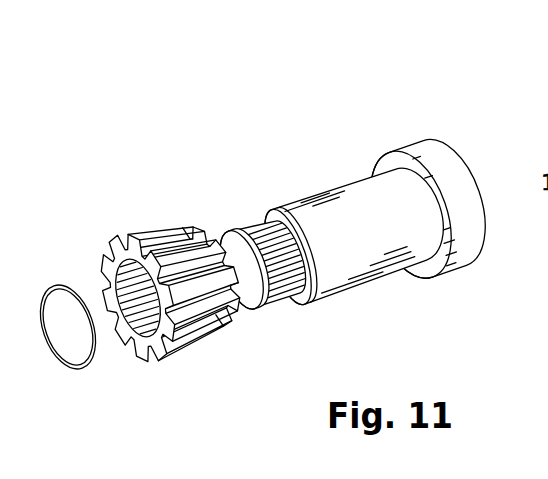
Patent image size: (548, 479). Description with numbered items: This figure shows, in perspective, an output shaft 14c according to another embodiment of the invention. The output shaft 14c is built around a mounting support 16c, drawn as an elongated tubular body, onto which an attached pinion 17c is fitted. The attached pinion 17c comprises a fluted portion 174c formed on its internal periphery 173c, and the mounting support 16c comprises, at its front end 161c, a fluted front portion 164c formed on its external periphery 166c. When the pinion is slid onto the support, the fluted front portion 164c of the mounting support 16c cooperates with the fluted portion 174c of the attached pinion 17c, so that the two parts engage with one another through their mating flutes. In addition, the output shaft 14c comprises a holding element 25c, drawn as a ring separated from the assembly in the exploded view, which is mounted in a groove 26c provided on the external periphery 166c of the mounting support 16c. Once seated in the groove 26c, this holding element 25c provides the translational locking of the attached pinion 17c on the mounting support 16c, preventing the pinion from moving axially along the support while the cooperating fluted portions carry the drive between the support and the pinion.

The output shaft 14c is at (464, 120).
The mounting support 16c is at (375, 287).
The attached pinion 17c is at (160, 242).
The holding element 25c is at (52, 362).
The groove 26c is at (218, 228).
The front end 161c is at (229, 216).
The fluted front portion 164c is at (270, 283).
The external periphery 166c is at (254, 308).
The internal periphery 173c is at (127, 287).
The fluted portion 174c is at (121, 348).